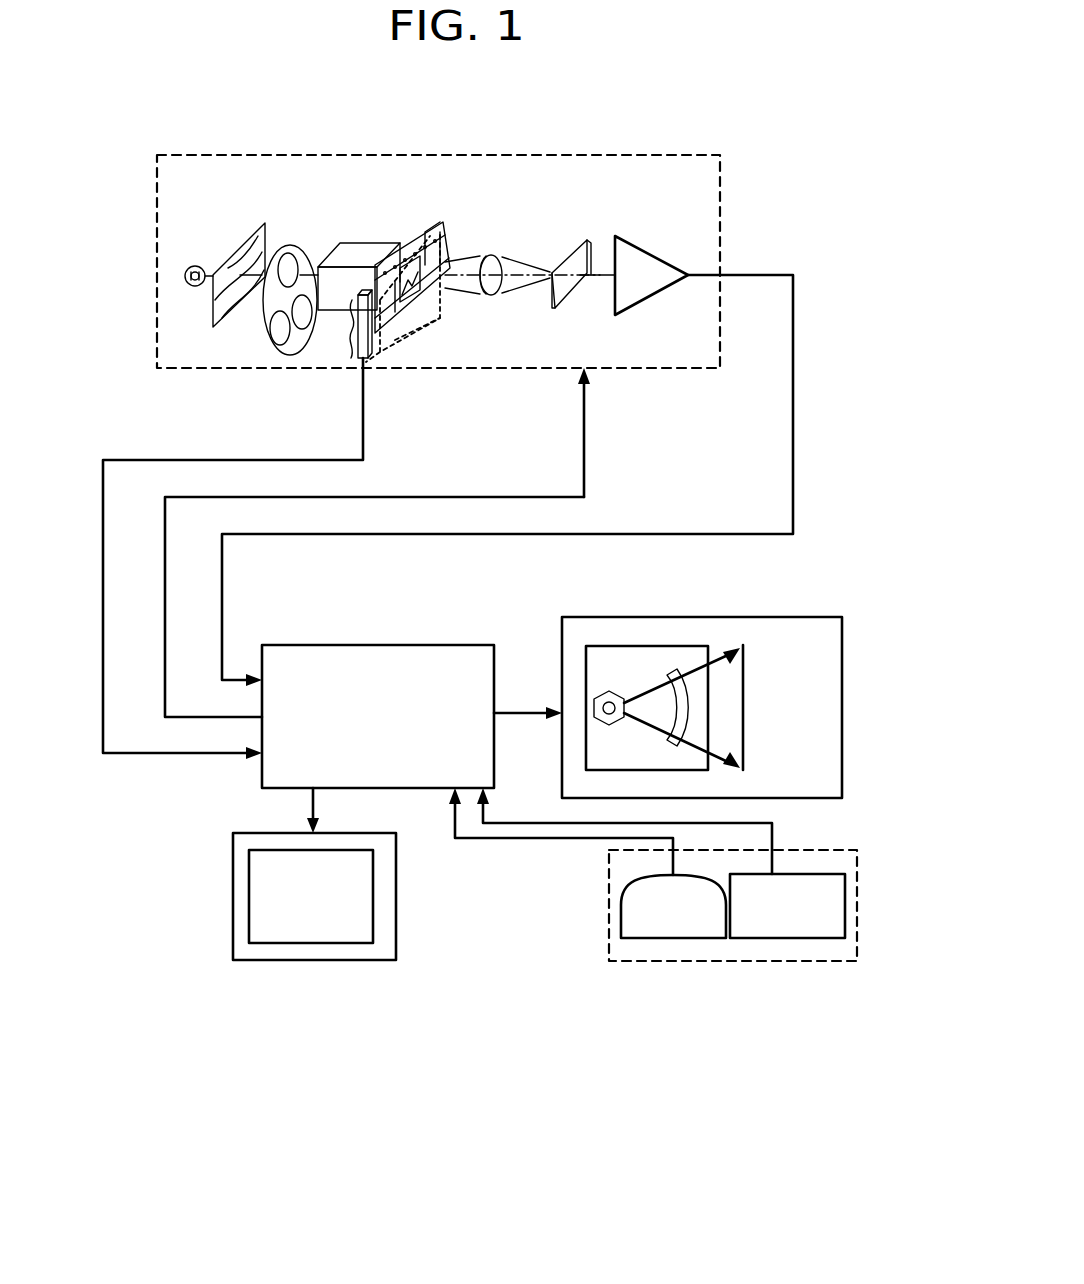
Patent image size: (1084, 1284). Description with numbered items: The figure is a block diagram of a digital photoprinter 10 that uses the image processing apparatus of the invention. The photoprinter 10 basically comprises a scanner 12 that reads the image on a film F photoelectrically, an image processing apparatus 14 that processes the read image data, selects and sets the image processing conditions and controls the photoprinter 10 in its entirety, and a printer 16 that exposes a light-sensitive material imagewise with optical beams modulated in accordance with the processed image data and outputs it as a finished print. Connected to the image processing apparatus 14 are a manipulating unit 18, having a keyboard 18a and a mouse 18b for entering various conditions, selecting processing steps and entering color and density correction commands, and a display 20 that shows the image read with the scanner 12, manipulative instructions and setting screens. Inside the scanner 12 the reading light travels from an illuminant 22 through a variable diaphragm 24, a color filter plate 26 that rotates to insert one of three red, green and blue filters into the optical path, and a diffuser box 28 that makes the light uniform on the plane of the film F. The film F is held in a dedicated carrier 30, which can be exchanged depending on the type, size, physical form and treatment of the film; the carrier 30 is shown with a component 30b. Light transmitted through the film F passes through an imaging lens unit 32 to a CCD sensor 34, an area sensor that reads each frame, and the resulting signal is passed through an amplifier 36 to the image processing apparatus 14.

The digital photoprinter 10 is at (826, 132).
The scanner 12 is at (212, 372).
The image processing apparatus 14 is at (376, 645).
The printer 16 is at (697, 617).
The manipulating unit 18 is at (714, 965).
The keyboard 18a is at (795, 945).
The mouse 18b is at (670, 945).
The display 20 is at (308, 962).
The illuminant 22 is at (195, 265).
The variable diaphragm 24 is at (246, 242).
The color filter plate 26 is at (292, 255).
The diffuser box 28 is at (357, 262).
The carrier 30 is at (440, 318).
The code reader / sensor 30b is at (370, 357).
The imaging lens unit 32 is at (489, 256).
The CCD sensor 34 is at (562, 252).
The amplifier 36 is at (652, 300).
The film F is at (444, 225).